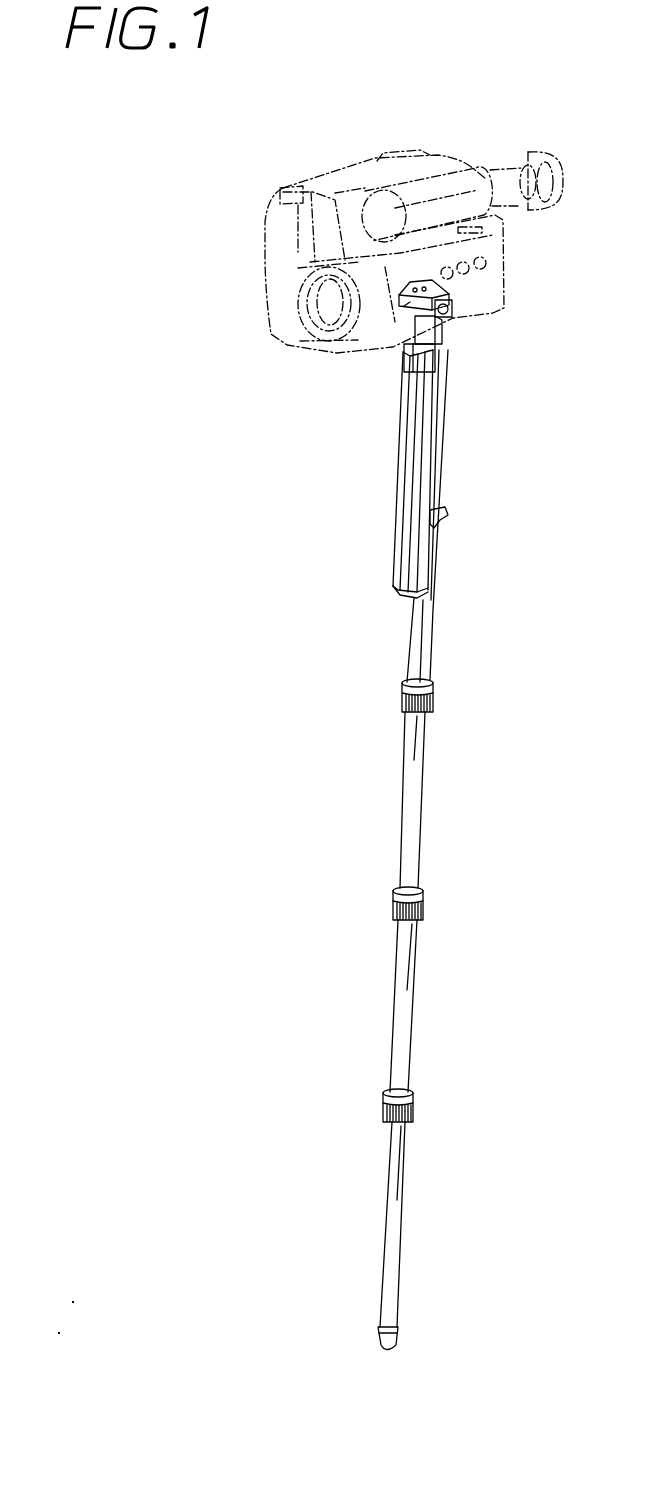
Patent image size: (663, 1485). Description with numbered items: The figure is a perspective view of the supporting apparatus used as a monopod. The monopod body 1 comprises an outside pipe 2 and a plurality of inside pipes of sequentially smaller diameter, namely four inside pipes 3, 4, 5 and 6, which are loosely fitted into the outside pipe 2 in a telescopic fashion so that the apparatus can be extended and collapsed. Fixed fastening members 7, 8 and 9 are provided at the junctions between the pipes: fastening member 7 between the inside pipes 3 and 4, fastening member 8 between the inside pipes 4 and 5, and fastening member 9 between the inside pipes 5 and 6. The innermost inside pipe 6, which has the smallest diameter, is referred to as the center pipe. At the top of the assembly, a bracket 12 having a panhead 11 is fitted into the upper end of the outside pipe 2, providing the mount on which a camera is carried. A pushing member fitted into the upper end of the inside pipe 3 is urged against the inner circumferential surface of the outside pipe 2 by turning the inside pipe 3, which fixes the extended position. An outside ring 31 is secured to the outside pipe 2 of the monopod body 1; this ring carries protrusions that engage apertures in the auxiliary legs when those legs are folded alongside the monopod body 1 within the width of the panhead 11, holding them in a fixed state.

The monopod body 1 is at (455, 457).
The outside pipe 2 is at (432, 473).
The inside pipe 3 is at (420, 643).
The inside pipe 4 is at (421, 770).
The inside pipe 5 is at (410, 985).
The inside center pipe 6 is at (396, 1195).
The fixed fastening member 7 is at (402, 700).
The fixed fastening member 8 is at (393, 910).
The fixed fastening member 9 is at (383, 1110).
The panhead 11 is at (404, 308).
The bracket 12 is at (443, 347).
The outside ring 31 is at (438, 521).